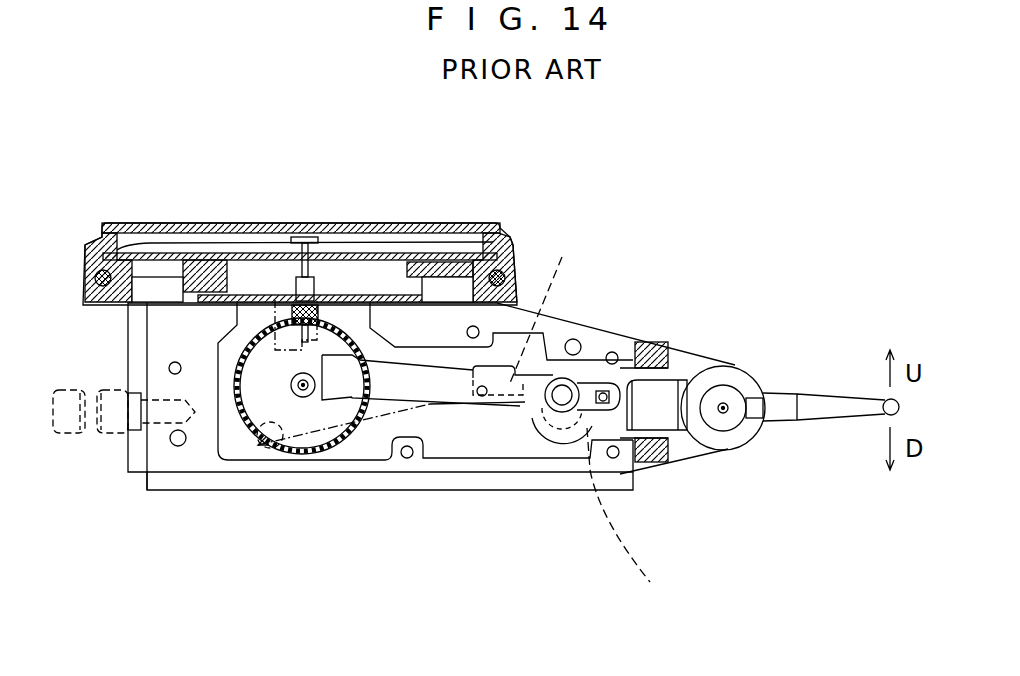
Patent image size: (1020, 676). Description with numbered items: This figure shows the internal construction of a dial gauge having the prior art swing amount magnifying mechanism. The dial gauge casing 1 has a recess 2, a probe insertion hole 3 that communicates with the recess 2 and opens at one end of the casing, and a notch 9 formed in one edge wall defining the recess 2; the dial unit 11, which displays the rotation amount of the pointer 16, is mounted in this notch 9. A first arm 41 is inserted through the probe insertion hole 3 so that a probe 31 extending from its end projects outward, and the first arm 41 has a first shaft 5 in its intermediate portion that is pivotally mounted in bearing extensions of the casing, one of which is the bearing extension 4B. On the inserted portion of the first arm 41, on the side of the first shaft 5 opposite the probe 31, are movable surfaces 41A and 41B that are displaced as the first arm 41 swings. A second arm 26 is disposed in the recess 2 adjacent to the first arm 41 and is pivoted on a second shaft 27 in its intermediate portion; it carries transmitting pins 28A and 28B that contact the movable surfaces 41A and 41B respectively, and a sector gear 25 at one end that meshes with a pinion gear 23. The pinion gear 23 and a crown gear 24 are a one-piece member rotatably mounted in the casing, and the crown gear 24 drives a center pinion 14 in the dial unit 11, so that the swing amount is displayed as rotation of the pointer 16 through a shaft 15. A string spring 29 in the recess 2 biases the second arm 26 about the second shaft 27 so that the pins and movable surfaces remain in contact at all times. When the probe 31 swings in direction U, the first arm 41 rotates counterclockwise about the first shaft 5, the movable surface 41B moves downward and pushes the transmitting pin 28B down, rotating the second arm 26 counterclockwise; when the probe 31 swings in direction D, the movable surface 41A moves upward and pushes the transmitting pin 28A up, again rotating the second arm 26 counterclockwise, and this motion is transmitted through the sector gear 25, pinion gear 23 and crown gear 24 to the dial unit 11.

The dial gauge casing 1 is at (202, 463).
The recess 2 is at (460, 443).
The probe insertion hole 3 is at (645, 463).
The bearing extension 4B is at (697, 453).
The first shaft 5 is at (726, 412).
The notch 9 is at (400, 222).
The dial unit 11 is at (493, 222).
The center pinion 14 is at (248, 222).
The shaft 15 is at (283, 222).
The pointer 16 is at (168, 222).
The pinion gear 23 is at (330, 447).
The crown gear 24 is at (297, 457).
The sector gear 25 is at (335, 398).
The second arm 26 is at (512, 402).
The second shaft 27 is at (578, 388).
The transmitting pin 28A is at (627, 380).
The transmitting pin 28B is at (484, 396).
The string spring 29 is at (433, 406).
The probe 31 is at (788, 393).
The first arm 41 is at (669, 392).
The movable surface 41A is at (635, 522).
The movable surface 41B is at (567, 309).